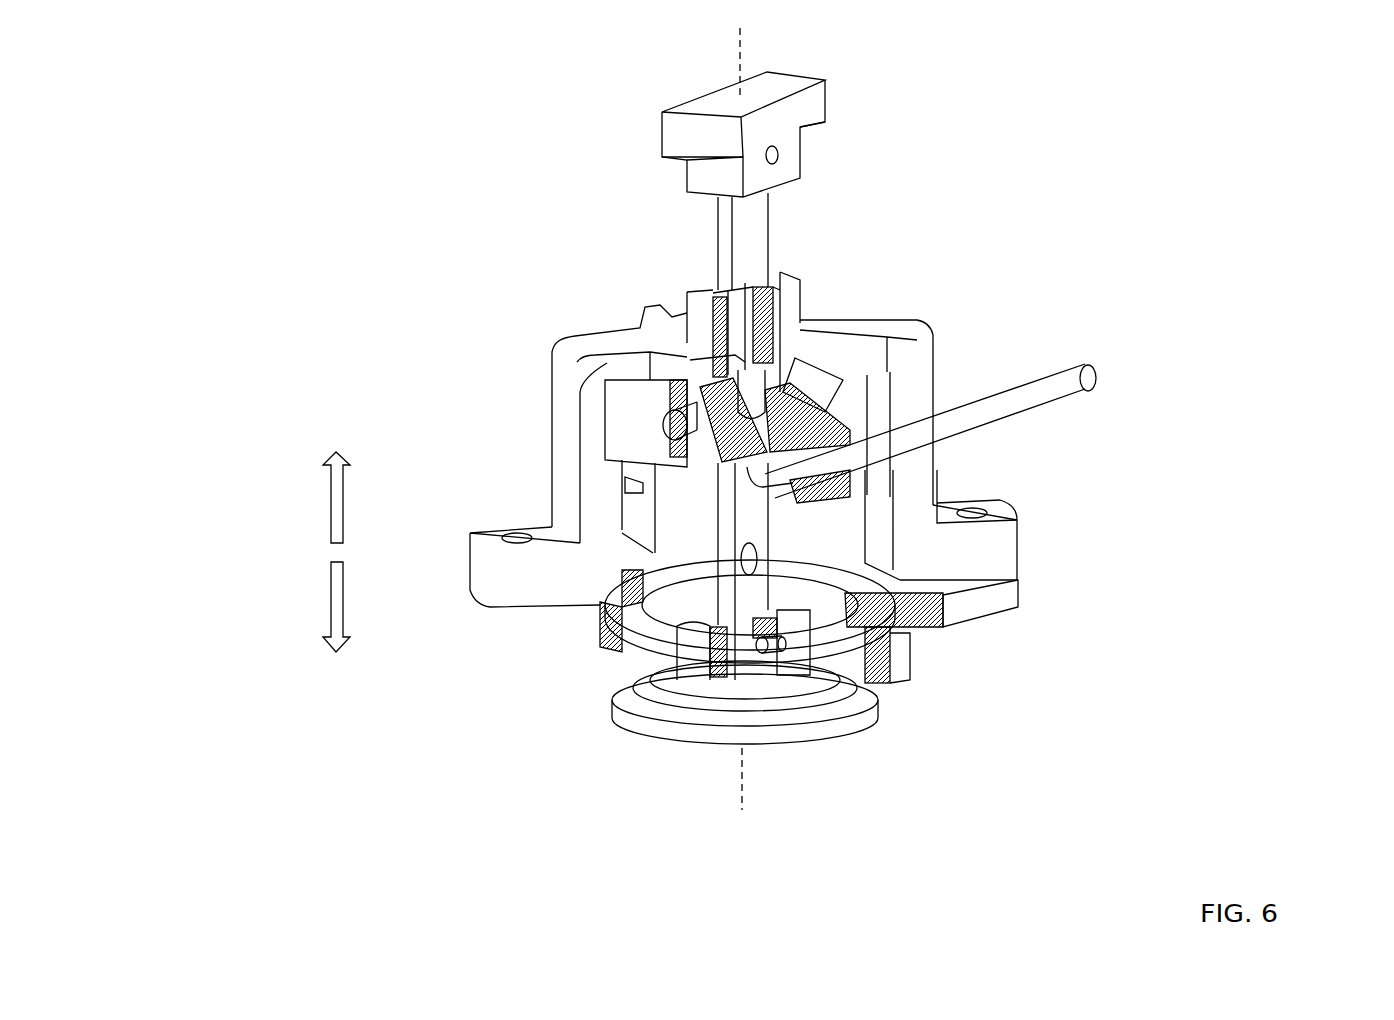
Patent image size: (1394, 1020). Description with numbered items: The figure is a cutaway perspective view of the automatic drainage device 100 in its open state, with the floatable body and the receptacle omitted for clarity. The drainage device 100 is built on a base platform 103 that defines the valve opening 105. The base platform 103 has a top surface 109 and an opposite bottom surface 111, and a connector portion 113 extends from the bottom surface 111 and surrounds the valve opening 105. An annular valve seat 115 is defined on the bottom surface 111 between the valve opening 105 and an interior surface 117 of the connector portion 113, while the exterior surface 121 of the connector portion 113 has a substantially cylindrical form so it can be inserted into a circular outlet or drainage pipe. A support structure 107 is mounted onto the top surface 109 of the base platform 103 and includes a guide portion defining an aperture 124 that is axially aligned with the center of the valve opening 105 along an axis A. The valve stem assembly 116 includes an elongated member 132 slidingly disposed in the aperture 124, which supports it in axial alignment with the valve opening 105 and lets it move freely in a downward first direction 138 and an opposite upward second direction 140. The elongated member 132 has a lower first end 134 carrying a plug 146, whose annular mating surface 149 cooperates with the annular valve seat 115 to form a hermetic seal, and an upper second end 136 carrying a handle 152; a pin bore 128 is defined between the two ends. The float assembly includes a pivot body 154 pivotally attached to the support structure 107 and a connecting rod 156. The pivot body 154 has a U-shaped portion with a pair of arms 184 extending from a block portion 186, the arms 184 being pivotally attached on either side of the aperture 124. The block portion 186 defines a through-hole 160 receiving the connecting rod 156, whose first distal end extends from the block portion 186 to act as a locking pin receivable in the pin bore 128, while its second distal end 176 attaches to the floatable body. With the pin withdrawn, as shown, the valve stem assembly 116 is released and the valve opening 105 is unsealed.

The axis A is at (740, 62).
The drainage device 100 is at (1178, 403).
The base platform 103 is at (958, 613).
The valve opening 105 is at (697, 575).
The support structure 107 is at (535, 415).
The top surface 109 is at (957, 587).
The bottom surface 111 is at (935, 640).
The connector portion 113 is at (795, 461).
The annular valve seat 115 is at (633, 607).
The valve stem assembly 116 is at (786, 245).
The interior surface 117 is at (830, 613).
The exterior surface 121 is at (898, 665).
The aperture 124 is at (747, 332).
The pin bore 128 is at (755, 557).
The elongated member 132 is at (737, 283).
The first end 134 is at (735, 655).
The second end 136 is at (728, 215).
The first direction 138 is at (327, 613).
The second direction 140 is at (327, 510).
The plug 146 is at (620, 750).
The annular mating surface 149 is at (825, 688).
The handle 152 is at (675, 129).
The pivot body 154 is at (712, 445).
The connecting rod 156 is at (1007, 400).
The through-hole 160 is at (610, 636).
The second distal end 176 is at (1082, 378).
The arms 184 is at (790, 367).
The block portion 186 is at (845, 473).